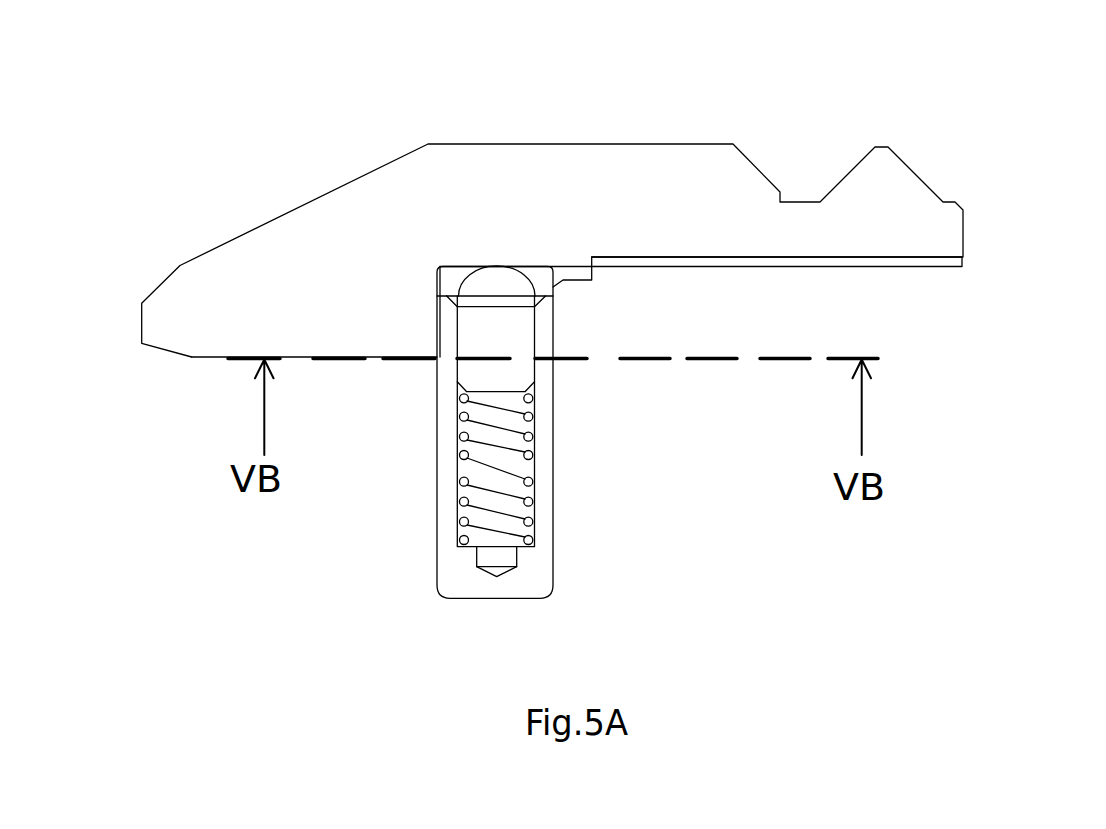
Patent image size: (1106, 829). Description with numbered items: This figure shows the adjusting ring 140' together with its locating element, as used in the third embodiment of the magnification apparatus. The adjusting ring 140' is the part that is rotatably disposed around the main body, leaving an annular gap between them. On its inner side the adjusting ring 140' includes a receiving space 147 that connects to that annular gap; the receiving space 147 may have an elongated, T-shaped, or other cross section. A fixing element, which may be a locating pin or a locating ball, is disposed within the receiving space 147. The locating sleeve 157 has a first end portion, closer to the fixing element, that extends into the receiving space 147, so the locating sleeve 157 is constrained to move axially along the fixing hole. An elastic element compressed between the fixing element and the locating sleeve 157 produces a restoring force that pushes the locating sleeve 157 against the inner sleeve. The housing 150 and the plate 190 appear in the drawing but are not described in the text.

The adjusting ring 140' is at (552, 188).
The receiving space 147 is at (450, 282).
The plunger housing 150 is at (436, 523).
The locating sleeve 157 is at (545, 502).
The plate 190 is at (867, 267).